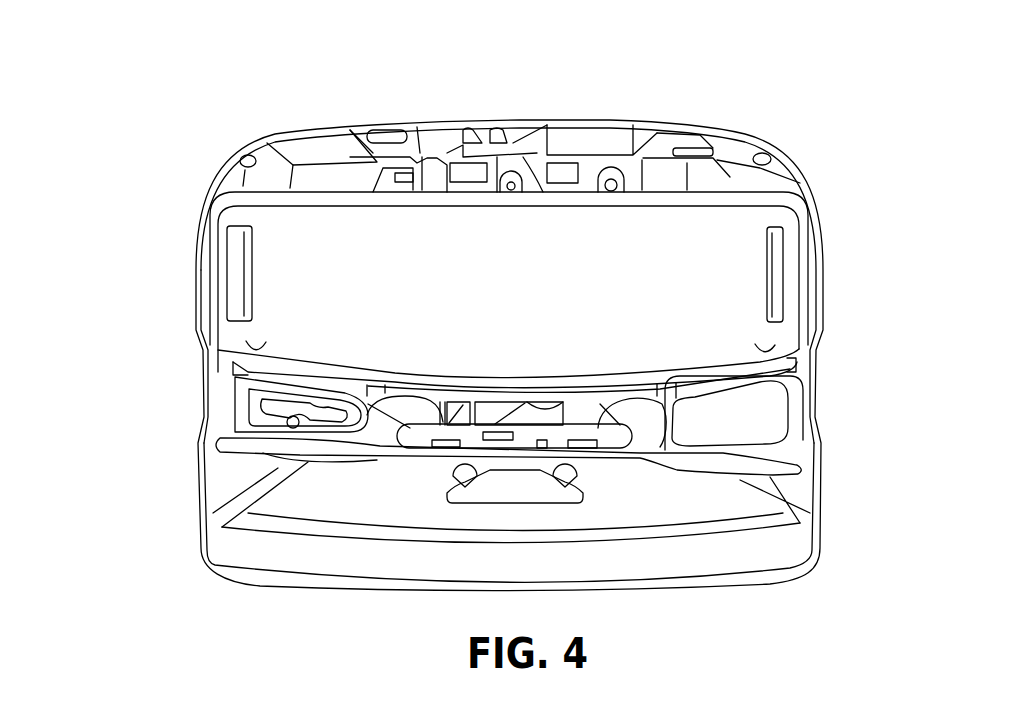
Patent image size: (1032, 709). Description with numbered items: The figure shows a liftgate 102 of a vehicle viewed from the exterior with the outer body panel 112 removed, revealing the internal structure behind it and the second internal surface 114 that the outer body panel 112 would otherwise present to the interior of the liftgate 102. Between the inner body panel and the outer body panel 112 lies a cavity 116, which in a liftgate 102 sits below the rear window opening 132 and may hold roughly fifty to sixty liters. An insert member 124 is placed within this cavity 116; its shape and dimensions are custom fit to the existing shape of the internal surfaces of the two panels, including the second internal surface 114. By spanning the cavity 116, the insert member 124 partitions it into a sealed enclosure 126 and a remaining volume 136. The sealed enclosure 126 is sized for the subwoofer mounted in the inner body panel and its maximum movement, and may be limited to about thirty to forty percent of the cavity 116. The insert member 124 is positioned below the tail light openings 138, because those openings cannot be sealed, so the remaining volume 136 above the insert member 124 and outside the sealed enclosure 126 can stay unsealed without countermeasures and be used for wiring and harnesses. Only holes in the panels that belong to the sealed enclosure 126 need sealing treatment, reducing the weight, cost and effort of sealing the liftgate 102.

The liftgate 102 is at (196, 120).
The outer body panel 112 is at (186, 239).
The second internal surface 114 is at (658, 394).
The cavity 116 is at (477, 448).
The insert member 124 is at (724, 484).
The sealed enclosure 126 is at (855, 450).
The rear window opening 132 is at (713, 242).
The remaining volume 136 is at (175, 343).
The tail light openings 138 is at (760, 414).